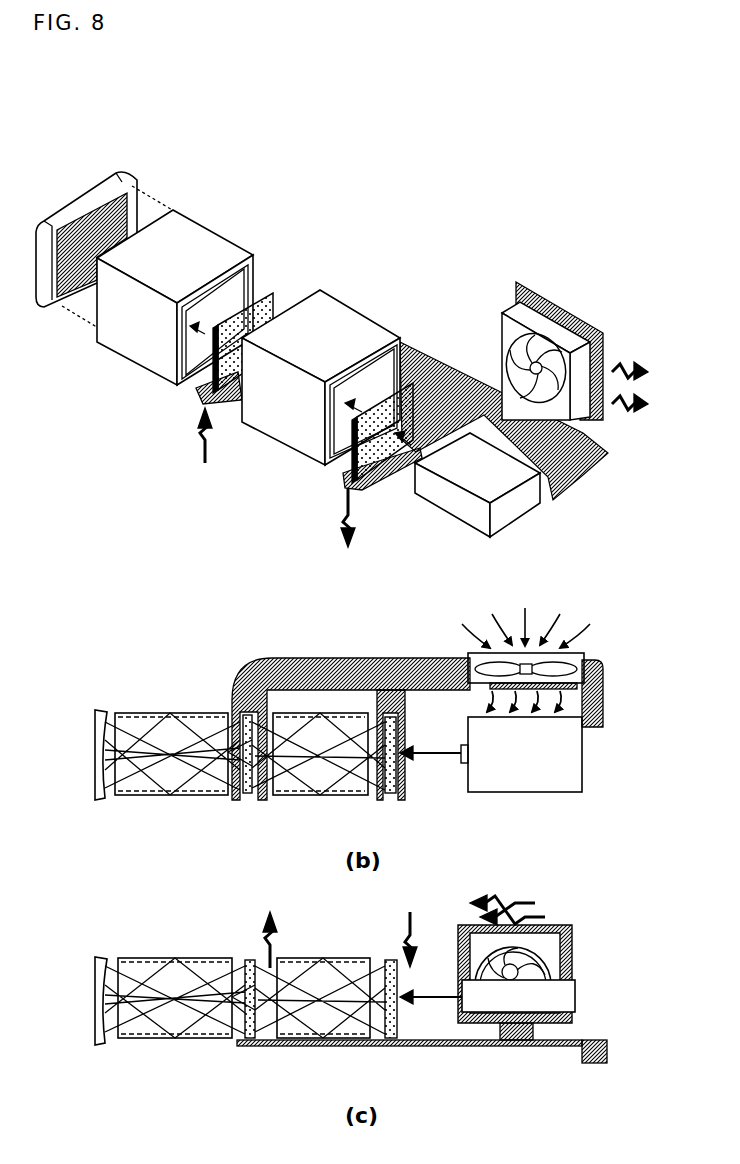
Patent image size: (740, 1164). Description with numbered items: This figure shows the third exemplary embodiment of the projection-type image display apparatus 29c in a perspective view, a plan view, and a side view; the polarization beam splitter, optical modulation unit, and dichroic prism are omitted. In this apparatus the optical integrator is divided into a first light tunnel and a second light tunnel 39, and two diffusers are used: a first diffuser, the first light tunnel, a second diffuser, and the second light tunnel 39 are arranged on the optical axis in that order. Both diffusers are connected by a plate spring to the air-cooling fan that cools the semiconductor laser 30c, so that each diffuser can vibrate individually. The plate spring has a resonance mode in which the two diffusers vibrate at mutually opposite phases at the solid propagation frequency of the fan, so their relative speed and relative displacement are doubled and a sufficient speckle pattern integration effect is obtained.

The projection-type image display apparatus 29c is at (492, 206).
The semiconductor laser 30c is at (563, 996).
The second light tunnel 39 is at (182, 246).